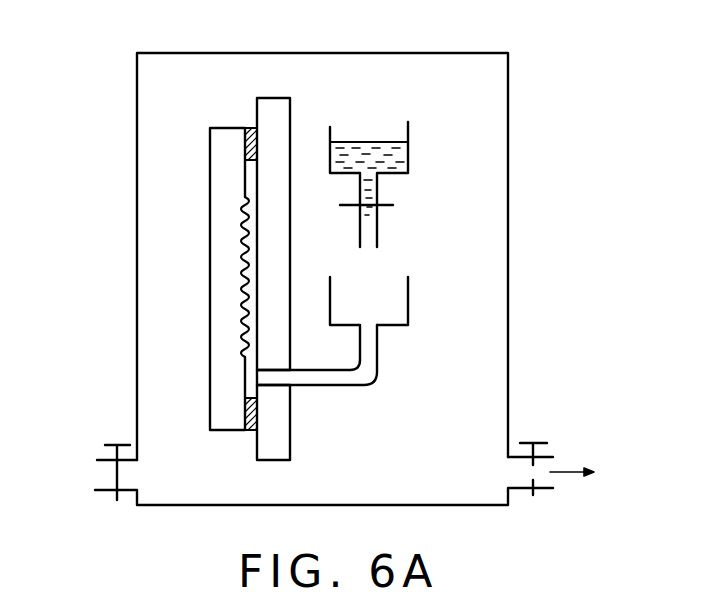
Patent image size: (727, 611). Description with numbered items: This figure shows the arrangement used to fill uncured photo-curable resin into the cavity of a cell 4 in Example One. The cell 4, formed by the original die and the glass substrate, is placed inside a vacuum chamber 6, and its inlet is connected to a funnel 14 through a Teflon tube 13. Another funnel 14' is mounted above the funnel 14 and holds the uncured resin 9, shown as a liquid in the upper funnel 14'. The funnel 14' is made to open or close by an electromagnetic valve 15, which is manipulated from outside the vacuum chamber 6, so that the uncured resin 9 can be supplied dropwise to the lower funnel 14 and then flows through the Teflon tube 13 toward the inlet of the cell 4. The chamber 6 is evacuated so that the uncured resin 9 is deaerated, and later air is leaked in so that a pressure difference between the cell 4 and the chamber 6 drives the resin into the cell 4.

The cell 4 is at (239, 101).
The chamber 6 is at (508, 172).
The uncured 2P 9 is at (368, 143).
The Teflon tube 13 is at (373, 360).
The funnel 14 is at (459, 308).
The another funnel 14' is at (454, 162).
The electromagnetic valve 15 is at (393, 203).